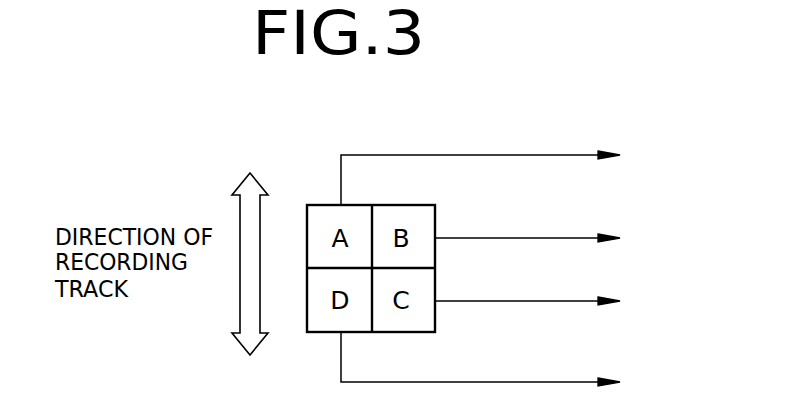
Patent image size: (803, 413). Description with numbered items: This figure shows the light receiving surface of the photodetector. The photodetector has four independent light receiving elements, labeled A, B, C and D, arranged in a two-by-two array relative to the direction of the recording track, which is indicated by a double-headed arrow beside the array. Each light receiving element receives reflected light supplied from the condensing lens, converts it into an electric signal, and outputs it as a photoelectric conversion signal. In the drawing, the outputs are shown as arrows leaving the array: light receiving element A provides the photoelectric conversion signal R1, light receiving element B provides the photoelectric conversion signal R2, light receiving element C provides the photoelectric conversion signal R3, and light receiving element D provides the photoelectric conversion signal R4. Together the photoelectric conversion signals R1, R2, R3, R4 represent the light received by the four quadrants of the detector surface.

The photoelectric conversion signal R1 is at (508, 174).
The photoelectric conversion signal R2 is at (555, 240).
The photoelectric conversion signal R3 is at (555, 303).
The photoelectric conversion signal R4 is at (508, 365).